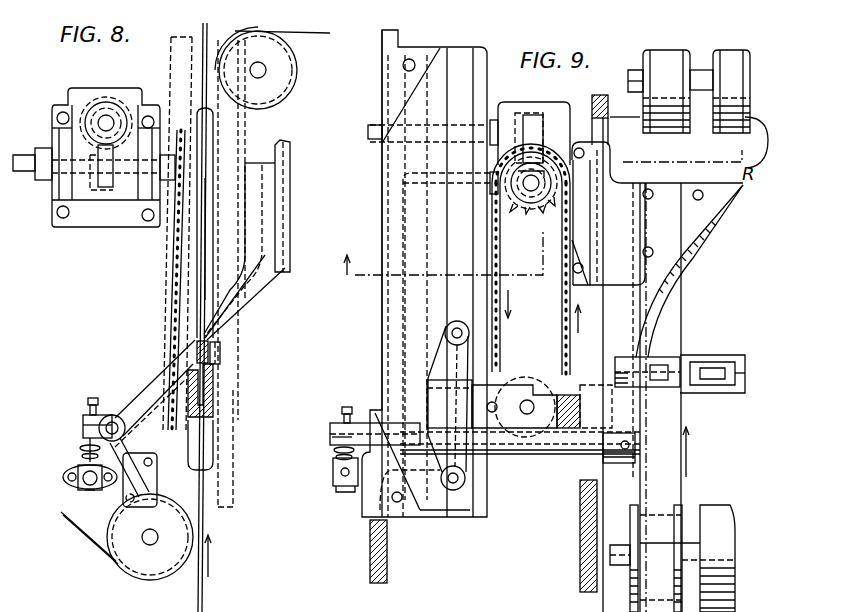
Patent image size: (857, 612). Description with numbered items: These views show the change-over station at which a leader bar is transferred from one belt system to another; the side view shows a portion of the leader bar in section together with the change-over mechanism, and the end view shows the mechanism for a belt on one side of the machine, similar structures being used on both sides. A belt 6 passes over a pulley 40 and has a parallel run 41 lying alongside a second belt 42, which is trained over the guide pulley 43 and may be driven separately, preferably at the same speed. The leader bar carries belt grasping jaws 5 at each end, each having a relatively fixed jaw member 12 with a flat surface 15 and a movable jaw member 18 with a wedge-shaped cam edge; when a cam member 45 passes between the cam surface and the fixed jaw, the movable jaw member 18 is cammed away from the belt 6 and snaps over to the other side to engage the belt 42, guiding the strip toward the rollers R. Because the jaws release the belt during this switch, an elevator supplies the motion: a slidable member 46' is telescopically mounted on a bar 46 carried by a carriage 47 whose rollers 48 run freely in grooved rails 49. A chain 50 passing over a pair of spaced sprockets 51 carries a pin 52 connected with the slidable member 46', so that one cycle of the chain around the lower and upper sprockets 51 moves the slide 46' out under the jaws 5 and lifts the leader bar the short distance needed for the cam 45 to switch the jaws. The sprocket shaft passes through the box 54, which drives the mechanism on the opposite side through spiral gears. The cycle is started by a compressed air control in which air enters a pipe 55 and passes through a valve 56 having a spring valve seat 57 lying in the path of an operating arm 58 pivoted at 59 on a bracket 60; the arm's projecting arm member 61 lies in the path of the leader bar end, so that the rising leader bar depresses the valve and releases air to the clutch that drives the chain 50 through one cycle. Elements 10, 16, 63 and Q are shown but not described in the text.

In FIG. 9, the belt grasping jaws 5 is at (684, 395).
In FIG. 8, the belt 6 is at (84, 540).
In FIG. 9, the section line 10 is at (550, 204).
In FIG. 8, the fixed jaw member 12 is at (221, 350).
In FIG. 8, the flat surface 15 is at (200, 343).
In FIG. 8, the guide block 16 is at (214, 366).
In FIG. 9, the movable jaw member 18 is at (632, 358).
In FIG. 8, the pulley 40 is at (132, 562).
In FIG. 8, the parallel run 41 is at (205, 178).
In FIG. 8, the second belt 42 is at (215, 220).
In FIG. 9, the second belt 42 is at (662, 497).
In FIG. 8, the guide pulley 43 is at (288, 62).
In FIG. 9, the guide pulley 43 is at (643, 117).
In FIG. 8, the cam member 45 is at (222, 326).
In FIG. 9, the cam member 45 is at (652, 312).
In FIG. 9, the bar 46 is at (564, 443).
In FIG. 9, the slidable member 46' is at (542, 444).
In FIG. 9, the carriage 47 is at (467, 457).
In FIG. 9, the rollers 48 is at (469, 333).
In FIG. 9, the grooved rails 49 is at (452, 507).
In FIG. 8, the chain 50 is at (170, 298).
In FIG. 9, the chain 50 is at (500, 258).
In FIG. 9, the sprockets 51 is at (523, 207).
In FIG. 9, the pin 52 is at (493, 400).
In FIG. 8, the box 54 is at (117, 200).
In FIG. 9, the box 54 is at (560, 113).
In FIG. 8, the pipe 55 is at (65, 477).
In FIG. 9, the pipe 55 is at (333, 480).
In FIG. 8, the valve 56 is at (88, 488).
In FIG. 9, the valve 56 is at (343, 492).
In FIG. 8, the spring valve seat 57 is at (80, 452).
In FIG. 9, the spring valve seat 57 is at (335, 457).
In FIG. 8, the operating arm 58 is at (87, 433).
In FIG. 9, the operating arm 58 is at (342, 437).
In FIG. 8, the pivot 59 is at (110, 420).
In FIG. 9, the pivot 59 is at (332, 437).
In FIG. 8, the bracket 60 is at (137, 456).
In FIG. 9, the bracket 60 is at (362, 422).
In FIG. 8, the arm member 61 is at (147, 387).
In FIG. 9, the arm member 61 is at (627, 456).
In FIG. 9, the frame plate 63 is at (402, 315).
In FIG. 9, the roller assembly Q is at (638, 70).
In FIG. 9, the rollers R is at (720, 523).